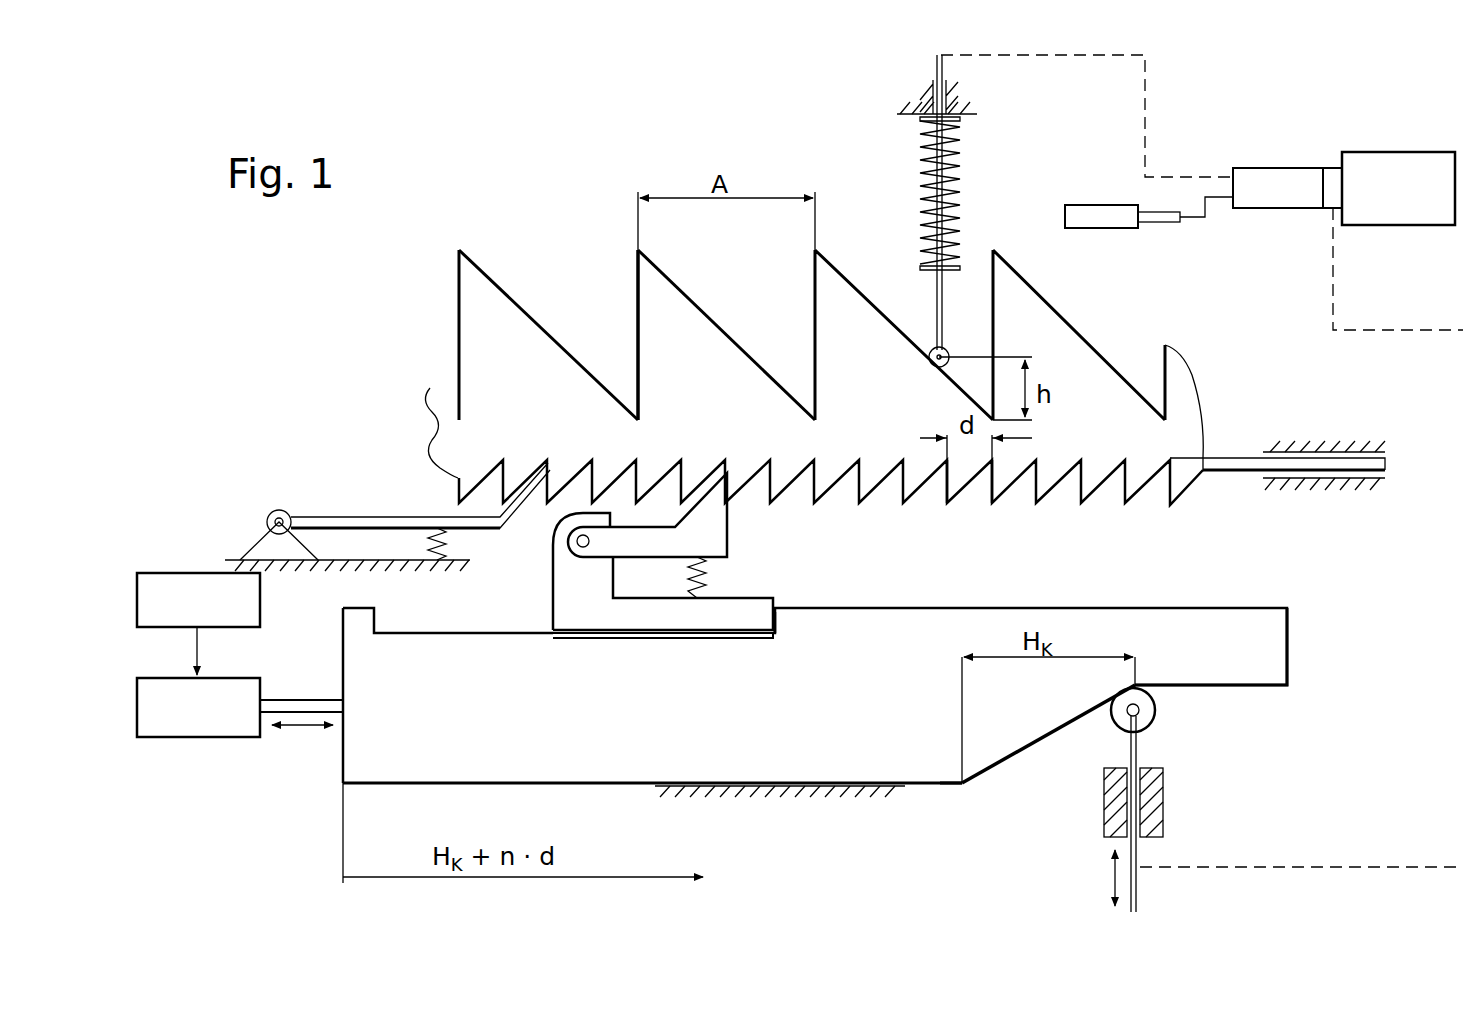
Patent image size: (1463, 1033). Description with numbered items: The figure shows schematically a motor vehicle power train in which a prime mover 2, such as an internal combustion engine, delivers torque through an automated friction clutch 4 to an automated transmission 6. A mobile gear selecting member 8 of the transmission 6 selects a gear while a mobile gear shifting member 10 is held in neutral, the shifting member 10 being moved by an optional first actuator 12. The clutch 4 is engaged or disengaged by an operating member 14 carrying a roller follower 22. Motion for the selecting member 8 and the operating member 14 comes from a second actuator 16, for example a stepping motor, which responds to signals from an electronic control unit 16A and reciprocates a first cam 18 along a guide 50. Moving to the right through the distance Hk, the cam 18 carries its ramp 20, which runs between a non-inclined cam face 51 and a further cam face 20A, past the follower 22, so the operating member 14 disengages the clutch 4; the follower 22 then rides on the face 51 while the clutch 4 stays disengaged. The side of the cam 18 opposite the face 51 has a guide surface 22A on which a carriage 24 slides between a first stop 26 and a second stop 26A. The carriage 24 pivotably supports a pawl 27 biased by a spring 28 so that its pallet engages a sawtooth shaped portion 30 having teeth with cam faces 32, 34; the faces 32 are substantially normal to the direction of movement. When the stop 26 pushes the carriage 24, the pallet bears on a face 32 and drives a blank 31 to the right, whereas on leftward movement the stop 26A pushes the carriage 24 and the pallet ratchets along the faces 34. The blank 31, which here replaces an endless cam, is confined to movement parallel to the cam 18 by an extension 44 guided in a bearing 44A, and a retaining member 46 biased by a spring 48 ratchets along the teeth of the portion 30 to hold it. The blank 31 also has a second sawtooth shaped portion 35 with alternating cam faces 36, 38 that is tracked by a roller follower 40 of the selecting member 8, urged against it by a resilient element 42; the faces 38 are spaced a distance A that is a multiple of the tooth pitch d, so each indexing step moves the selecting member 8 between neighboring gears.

The prime mover 2 is at (1398, 188).
The automated torque transmission system 4 is at (1335, 182).
The automated transmission 6 is at (1272, 180).
The gear selecting member 8 is at (945, 160).
The gear shifting member 10 is at (1158, 222).
The first actuator 12 is at (1100, 213).
The operating member 14 is at (1140, 900).
The second actuator 16 is at (240, 682).
The electronic control unit 16A is at (198, 600).
The first cam 18 is at (596, 772).
The ramp 20 is at (1017, 762).
The cam face 20A is at (1268, 690).
The roller follower 22 is at (1145, 710).
The guide surface 22A is at (680, 642).
The carriage 24 is at (722, 605).
The first stop 26 is at (355, 620).
The second stop 26A is at (790, 618).
The pawl 27 is at (742, 532).
The spring 28 is at (745, 565).
The sawtooth shaped portion 30 is at (1100, 497).
The blank 31 is at (480, 379).
The cam face 32 is at (945, 497).
The cam face 34 is at (1010, 495).
The second sawtooth shaped portion 35 is at (551, 310).
The cam face 36 is at (486, 270).
The cam face 38 is at (626, 270).
The roller follower 40 is at (949, 352).
The resilient element 42 is at (924, 195).
The extension 44 is at (1228, 465).
The bearing 44A is at (1322, 487).
The retaining member 46 is at (357, 517).
The spring 48 is at (452, 545).
The guide 50 is at (765, 797).
The cam face 51 is at (930, 790).